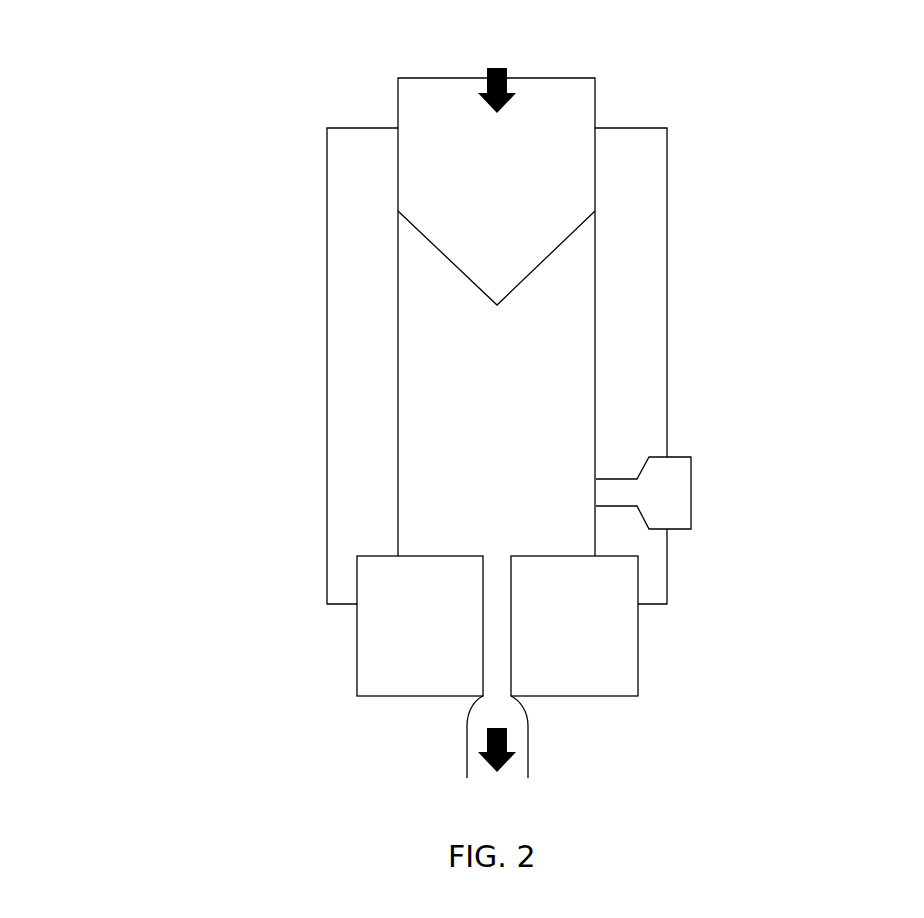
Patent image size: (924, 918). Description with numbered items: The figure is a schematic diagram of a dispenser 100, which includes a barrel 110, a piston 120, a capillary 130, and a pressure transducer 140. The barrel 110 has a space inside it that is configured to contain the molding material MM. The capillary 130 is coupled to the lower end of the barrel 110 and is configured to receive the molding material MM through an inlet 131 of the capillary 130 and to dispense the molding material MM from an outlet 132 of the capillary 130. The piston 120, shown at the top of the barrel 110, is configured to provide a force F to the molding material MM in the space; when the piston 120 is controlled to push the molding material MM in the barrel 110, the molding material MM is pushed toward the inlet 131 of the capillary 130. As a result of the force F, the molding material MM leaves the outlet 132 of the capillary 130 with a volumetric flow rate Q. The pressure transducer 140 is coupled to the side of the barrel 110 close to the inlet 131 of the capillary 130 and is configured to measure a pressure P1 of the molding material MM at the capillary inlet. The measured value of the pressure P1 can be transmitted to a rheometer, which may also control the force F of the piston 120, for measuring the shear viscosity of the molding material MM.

The dispenser 100 is at (812, 95).
The barrel 110 is at (322, 195).
The piston 120 is at (523, 180).
The capillary 130 is at (478, 648).
The inlet 131 is at (496, 556).
The outlet 132 is at (497, 695).
The pressure transducer 140 is at (697, 480).
The molding material MM is at (482, 398).
The force F is at (497, 69).
The volumetric flow rate Q is at (497, 771).
The pressure P1 is at (522, 520).